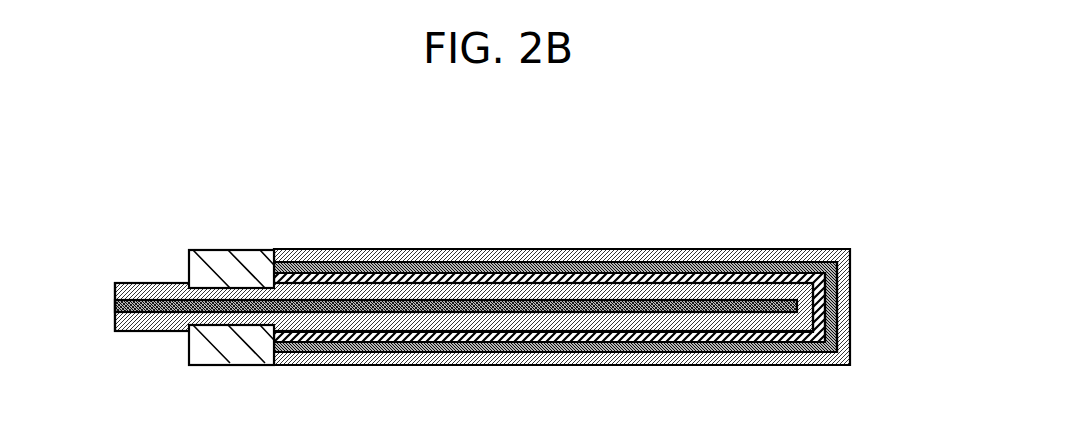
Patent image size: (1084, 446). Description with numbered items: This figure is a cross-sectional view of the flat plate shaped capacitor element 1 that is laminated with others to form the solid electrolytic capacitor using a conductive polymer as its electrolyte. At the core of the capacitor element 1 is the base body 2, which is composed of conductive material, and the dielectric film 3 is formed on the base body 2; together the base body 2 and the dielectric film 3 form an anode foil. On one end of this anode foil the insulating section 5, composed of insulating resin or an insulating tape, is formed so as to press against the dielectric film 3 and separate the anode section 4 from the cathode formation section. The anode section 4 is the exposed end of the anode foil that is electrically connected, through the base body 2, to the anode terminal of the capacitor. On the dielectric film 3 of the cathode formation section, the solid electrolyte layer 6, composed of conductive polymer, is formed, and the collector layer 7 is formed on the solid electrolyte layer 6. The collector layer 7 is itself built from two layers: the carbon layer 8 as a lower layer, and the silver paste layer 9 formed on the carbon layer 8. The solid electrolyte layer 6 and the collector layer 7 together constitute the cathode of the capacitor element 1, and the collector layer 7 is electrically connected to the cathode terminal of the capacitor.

The capacitor element 1 is at (504, 267).
The base body 2 is at (797, 305).
The dielectric film 3 is at (802, 292).
The anode section 4 is at (177, 350).
The insulating section 5 is at (225, 250).
The solid electrolyte layer 6 is at (824, 272).
The collector layer 7 is at (555, 240).
The carbon layer 8 is at (366, 278).
The silver paste layer 9 is at (319, 266).